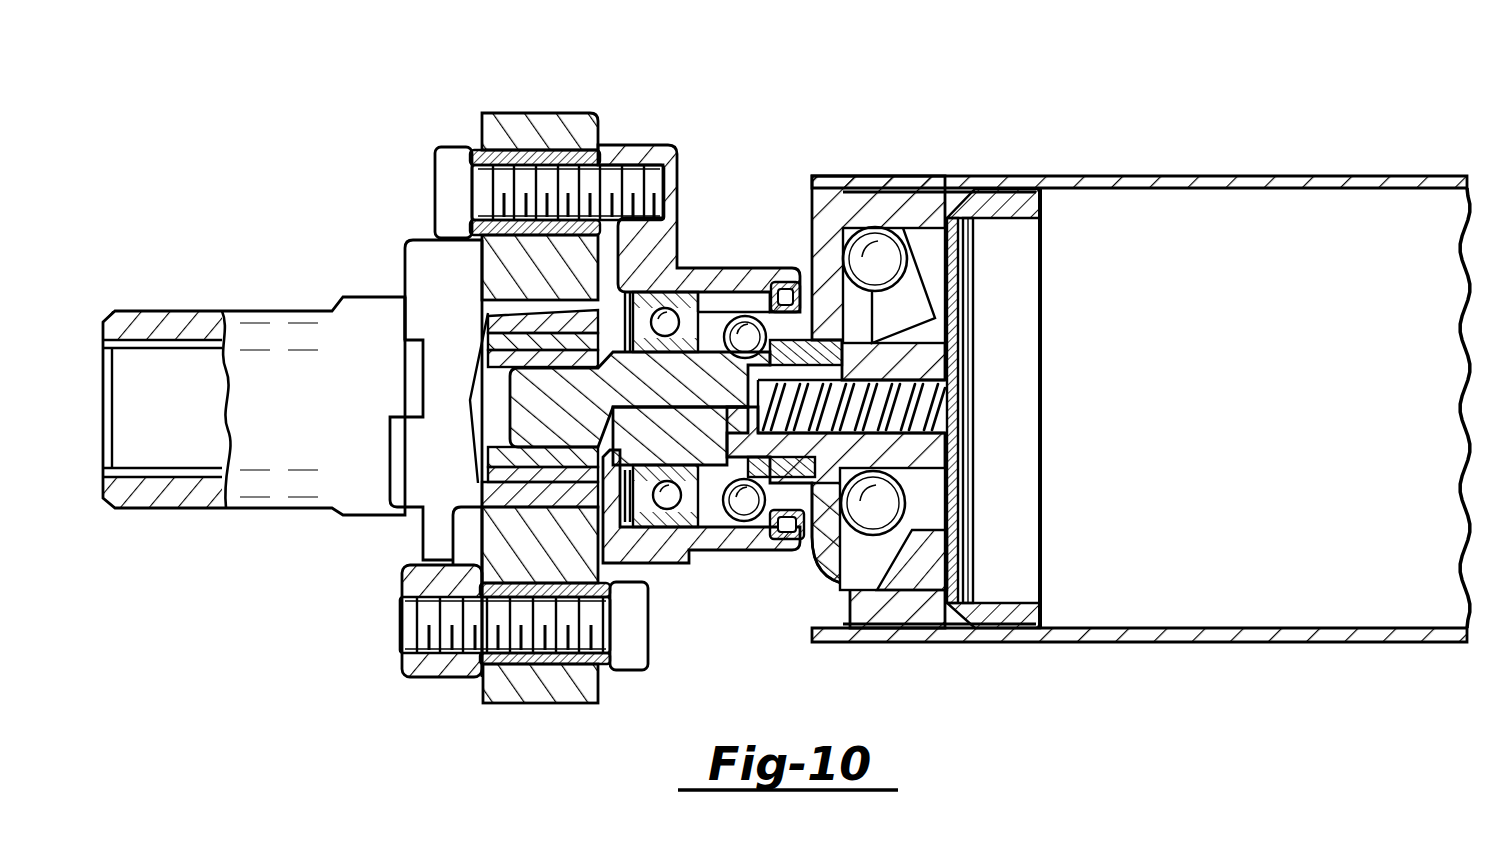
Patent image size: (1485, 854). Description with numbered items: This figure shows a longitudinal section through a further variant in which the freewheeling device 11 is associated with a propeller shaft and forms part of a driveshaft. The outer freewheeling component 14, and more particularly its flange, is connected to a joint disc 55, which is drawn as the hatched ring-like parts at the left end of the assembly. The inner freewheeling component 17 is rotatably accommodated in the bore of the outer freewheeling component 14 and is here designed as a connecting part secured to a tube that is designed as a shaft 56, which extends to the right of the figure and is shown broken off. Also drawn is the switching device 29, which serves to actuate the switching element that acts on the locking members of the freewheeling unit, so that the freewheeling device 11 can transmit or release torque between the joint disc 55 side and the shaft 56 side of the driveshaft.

The freewheeling device 11 is at (672, 140).
The outer freewheeling component 14 is at (677, 263).
The inner freewheeling component 17 is at (714, 443).
The switching device 29 is at (940, 543).
The joint disc 55 is at (552, 127).
The shaft 56 is at (1243, 178).